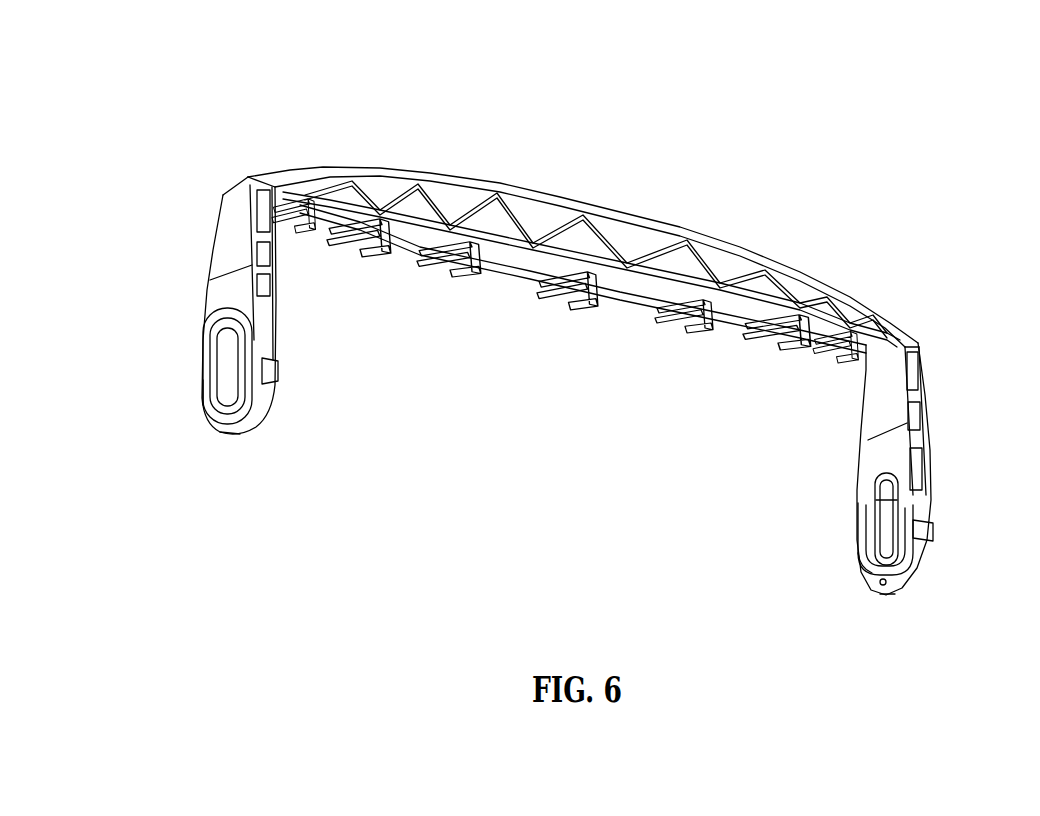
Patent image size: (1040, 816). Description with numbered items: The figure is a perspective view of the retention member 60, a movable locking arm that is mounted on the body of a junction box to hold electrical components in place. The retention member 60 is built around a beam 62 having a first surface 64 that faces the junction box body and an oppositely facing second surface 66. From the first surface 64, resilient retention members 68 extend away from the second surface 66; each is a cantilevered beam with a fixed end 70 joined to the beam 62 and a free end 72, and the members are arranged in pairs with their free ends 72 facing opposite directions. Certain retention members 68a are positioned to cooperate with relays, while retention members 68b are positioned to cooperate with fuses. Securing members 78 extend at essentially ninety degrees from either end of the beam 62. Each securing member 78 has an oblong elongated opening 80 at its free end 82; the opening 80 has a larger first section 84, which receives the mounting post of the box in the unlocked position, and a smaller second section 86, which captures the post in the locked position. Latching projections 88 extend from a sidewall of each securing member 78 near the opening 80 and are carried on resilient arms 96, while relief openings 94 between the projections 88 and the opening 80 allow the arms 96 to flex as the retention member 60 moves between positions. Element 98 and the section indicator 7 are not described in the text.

The retention member 60 is at (729, 188).
The beam 62 is at (583, 238).
The first surface 64 is at (618, 291).
The second surface 66 is at (458, 175).
The resilient retention member 68 is at (356, 256).
The retention member 68a is at (757, 353).
The retention member 68b is at (333, 242).
The fixed end 70 is at (352, 186).
The free end 72 is at (293, 238).
The securing member 78 is at (228, 235).
The elongated opening 80 is at (203, 377).
The free end 82 is at (238, 434).
The first section 84 is at (203, 410).
The second section 86 is at (228, 335).
The latching projection 88 is at (272, 362).
The relief opening 94 is at (857, 565).
The resilient arm 96 is at (268, 352).
The catch 98 is at (875, 507).
The section line 7- 7 is at (640, 196).